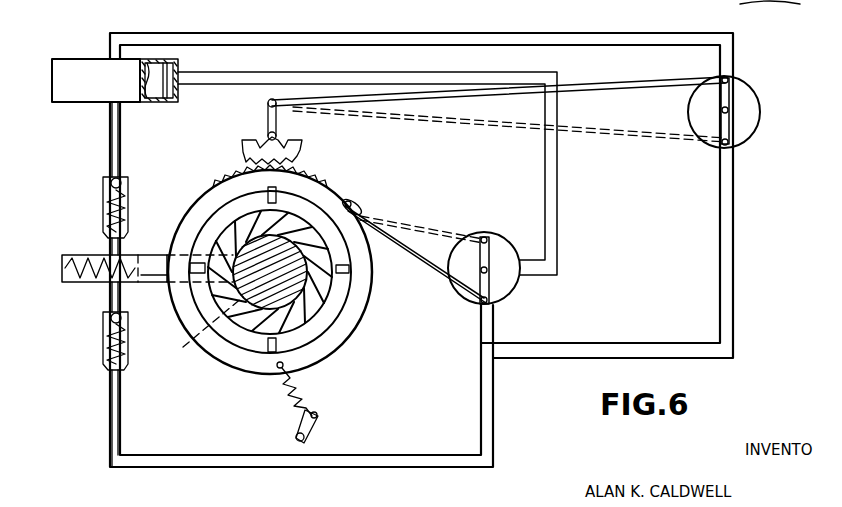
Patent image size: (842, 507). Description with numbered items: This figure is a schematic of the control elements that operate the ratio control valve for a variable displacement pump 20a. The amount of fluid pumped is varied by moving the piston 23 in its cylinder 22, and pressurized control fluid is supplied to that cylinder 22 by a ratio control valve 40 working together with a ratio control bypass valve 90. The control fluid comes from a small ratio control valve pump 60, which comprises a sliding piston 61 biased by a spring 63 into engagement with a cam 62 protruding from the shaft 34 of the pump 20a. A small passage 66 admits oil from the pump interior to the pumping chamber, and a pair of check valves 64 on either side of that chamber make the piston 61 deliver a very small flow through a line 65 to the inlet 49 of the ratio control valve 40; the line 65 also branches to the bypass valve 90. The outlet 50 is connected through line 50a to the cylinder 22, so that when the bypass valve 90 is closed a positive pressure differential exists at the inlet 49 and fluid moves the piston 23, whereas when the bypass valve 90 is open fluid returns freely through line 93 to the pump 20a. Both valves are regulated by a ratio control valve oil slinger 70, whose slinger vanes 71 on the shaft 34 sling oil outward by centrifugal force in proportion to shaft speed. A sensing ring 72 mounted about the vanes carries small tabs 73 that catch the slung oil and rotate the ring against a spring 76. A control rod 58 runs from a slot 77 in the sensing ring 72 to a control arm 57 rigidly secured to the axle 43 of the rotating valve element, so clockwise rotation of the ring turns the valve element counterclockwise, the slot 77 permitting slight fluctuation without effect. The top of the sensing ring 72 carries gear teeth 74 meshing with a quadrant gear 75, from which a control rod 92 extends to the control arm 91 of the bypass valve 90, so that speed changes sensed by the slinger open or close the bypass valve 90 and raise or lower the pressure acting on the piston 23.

The pump 20a is at (72, 64).
The cylinder 22 is at (172, 100).
The piston 23 is at (155, 88).
The shaft 34 is at (262, 300).
The ratio control valve 40 is at (534, 258).
The axle 43 is at (490, 272).
The inlet 49 is at (490, 326).
The outlet 50 is at (560, 276).
The line 50a is at (552, 259).
The control arm 57 is at (488, 246).
The control rod 58 is at (397, 247).
The ratio control valve pump 60 is at (159, 244).
The sliding piston 61 is at (160, 284).
The cam 62 is at (199, 331).
The spring 63 is at (78, 256).
The check valves 64 is at (105, 192).
The line 65 is at (215, 462).
The passage 66 is at (118, 145).
The ratio control valve oil slinger 70 is at (352, 186).
The slinger vanes 71 is at (326, 312).
The sensing ring 72 is at (362, 300).
The tabs 73 is at (268, 197).
The gear teeth 74 is at (310, 173).
The quadrant gear 75 is at (283, 148).
The spring 76 is at (300, 393).
The slot 77 is at (356, 207).
The ratio control bypass valve 90 is at (766, 128).
The control arm 91 is at (731, 97).
The control rod 92 is at (632, 88).
The line 93 is at (710, 38).